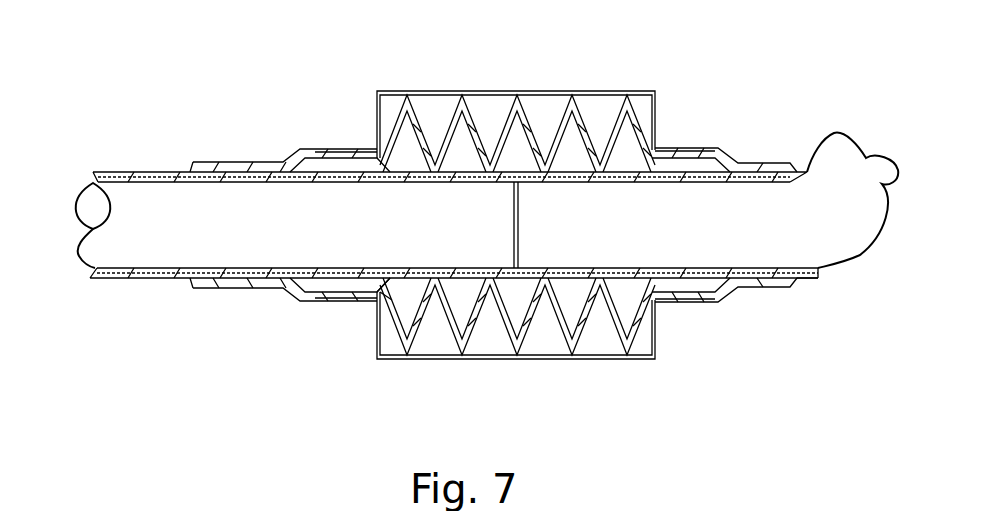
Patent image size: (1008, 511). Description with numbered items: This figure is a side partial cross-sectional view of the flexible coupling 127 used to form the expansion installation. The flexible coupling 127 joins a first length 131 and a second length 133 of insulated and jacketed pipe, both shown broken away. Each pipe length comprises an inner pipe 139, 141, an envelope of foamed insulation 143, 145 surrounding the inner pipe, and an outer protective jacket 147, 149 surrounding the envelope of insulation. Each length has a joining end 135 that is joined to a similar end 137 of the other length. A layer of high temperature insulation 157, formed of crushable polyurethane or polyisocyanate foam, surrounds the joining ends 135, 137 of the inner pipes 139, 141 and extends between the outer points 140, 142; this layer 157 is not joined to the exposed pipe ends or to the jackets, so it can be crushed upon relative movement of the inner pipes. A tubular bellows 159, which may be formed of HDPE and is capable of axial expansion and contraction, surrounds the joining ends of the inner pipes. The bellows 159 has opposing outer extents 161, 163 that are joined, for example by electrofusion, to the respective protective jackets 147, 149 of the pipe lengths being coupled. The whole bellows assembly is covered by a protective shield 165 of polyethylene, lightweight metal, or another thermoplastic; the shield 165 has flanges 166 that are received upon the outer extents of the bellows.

The flexible coupling 127 is at (626, 56).
The first length 131 is at (797, 130).
The second length 133 is at (113, 150).
The joining end 135 is at (518, 212).
The joining end 137 is at (516, 240).
The inner pipe 139 is at (185, 172).
The outer point 140 is at (395, 316).
The inner pipe 141 is at (667, 278).
The outer point 142 is at (645, 345).
The envelope of foamed insulation 143 is at (132, 278).
The envelope of foamed insulation 145 is at (808, 278).
The outer protective jacket 147 is at (176, 288).
The outer protective jacket 149 is at (813, 278).
The layer of high temperature insulation 157 is at (555, 272).
The tubular bellows 159 is at (473, 120).
The outer extent 161 is at (767, 148).
The outer extent 163 is at (240, 162).
The shield 165 is at (433, 91).
The flanges 166 is at (333, 149).